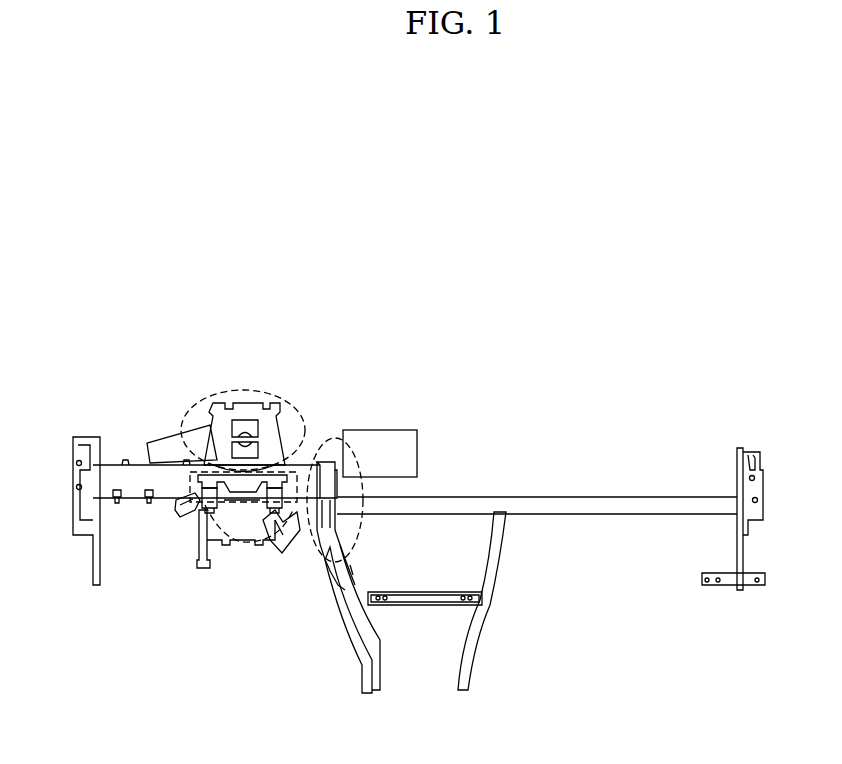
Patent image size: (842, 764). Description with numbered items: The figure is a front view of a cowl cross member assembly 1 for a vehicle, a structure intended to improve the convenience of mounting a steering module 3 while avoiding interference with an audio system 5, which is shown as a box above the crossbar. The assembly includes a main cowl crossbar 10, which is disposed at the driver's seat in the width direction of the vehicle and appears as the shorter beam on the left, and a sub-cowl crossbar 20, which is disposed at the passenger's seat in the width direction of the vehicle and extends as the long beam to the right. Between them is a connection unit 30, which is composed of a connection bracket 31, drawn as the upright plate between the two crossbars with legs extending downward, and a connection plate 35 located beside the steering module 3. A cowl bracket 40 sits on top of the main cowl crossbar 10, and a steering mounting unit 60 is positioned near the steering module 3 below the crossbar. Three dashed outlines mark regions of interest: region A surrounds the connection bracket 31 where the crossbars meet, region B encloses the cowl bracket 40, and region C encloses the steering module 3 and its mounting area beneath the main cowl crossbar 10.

The cowl cross member assembly 1 is at (420, 303).
The steering module 3 is at (232, 516).
The audio system 5 is at (417, 455).
The main cowl crossbar 10 is at (137, 472).
The sub-cowl crossbar 20 is at (556, 505).
The connection unit 30 is at (253, 630).
The connection bracket 31 is at (333, 522).
The connection plate 35 is at (300, 535).
The cowl bracket 40 is at (258, 414).
The steering mounting unit 60 is at (196, 516).
The region A is at (333, 437).
The region B is at (241, 392).
The region C is at (238, 544).